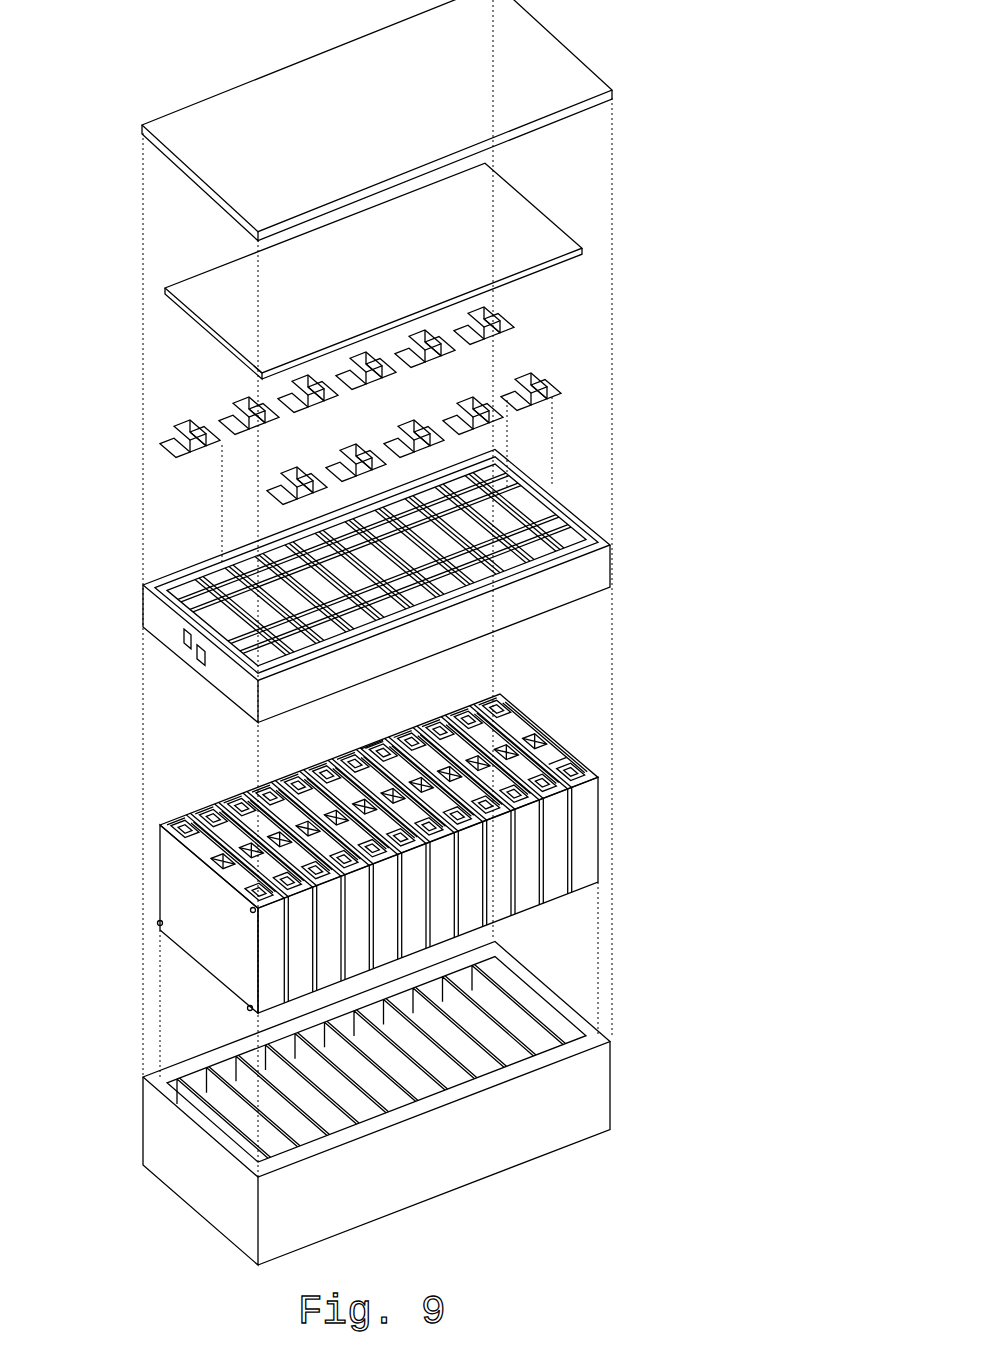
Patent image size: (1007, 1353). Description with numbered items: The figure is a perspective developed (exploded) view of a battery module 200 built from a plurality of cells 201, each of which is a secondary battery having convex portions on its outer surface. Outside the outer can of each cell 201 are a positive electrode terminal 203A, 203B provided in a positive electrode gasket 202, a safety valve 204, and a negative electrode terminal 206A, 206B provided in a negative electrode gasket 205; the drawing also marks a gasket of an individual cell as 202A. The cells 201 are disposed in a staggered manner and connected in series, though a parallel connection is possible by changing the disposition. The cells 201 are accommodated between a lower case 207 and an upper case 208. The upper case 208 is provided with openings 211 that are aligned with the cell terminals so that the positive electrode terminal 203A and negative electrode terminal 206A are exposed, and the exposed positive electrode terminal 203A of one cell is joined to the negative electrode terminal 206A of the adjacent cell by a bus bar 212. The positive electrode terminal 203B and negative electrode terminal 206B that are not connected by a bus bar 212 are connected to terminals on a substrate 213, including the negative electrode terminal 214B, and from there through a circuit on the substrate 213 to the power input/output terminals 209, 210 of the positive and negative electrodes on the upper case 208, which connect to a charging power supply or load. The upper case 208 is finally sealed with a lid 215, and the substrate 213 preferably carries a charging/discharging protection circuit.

The battery module 200 is at (100, 75).
The cell 201 is at (590, 861).
The positive electrode gasket 202 is at (587, 767).
The cap plate of cell 202A is at (420, 738).
The positive electrode terminal 203A is at (185, 826).
The positive electrode terminal 203B is at (572, 762).
The safety valve 204 is at (547, 738).
The negative electrode gasket 205 is at (510, 710).
The negative electrode terminal 206A is at (210, 815).
The negative electrode terminal 206B is at (250, 906).
The lower case 207 is at (600, 1075).
The upper case 208 is at (598, 573).
The power input/output terminal 209 is at (199, 656).
The power input/output terminal 210 is at (184, 638).
The openings 211 is at (570, 533).
The bus bar 212 is at (553, 389).
The substrate 213 is at (570, 238).
The negative electrode terminal 214B is at (254, 368).
The lid 215 is at (574, 45).